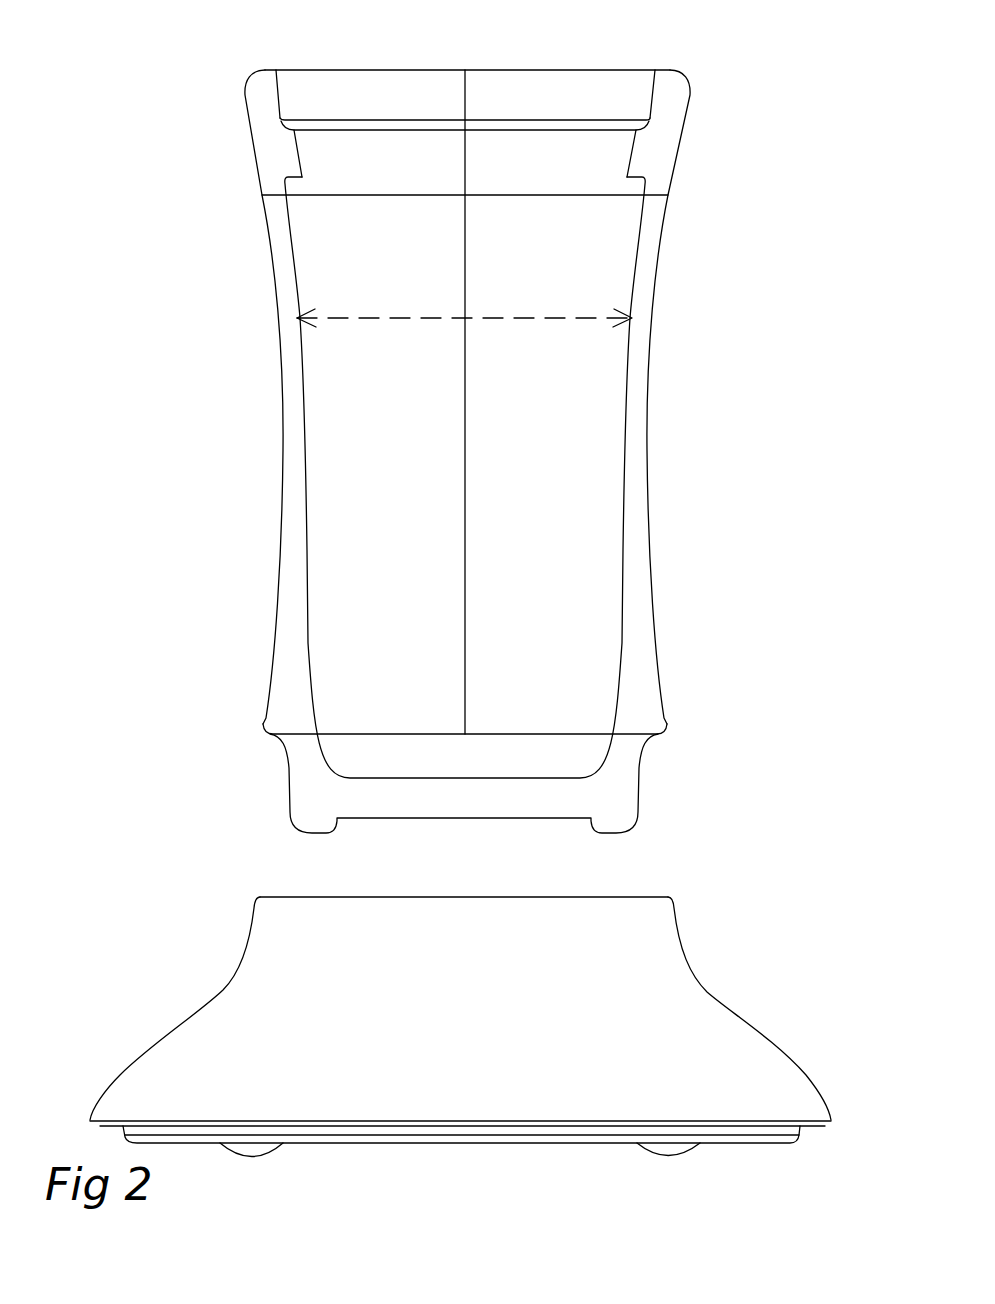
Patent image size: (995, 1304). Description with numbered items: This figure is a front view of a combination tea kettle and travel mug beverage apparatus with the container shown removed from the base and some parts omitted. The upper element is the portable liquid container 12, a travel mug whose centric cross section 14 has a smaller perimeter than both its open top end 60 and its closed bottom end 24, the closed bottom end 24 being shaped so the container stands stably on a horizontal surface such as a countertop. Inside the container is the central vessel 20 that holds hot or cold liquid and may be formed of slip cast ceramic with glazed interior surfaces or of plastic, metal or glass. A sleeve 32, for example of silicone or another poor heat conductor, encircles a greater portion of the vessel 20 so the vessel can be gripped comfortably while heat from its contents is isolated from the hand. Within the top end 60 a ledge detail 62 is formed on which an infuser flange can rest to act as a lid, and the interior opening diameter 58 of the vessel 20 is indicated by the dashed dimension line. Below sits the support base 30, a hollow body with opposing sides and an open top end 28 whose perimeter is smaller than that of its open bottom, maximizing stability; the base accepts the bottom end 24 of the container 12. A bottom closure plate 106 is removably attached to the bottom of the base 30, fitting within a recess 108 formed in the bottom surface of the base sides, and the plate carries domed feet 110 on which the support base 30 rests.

The portable liquid container 12 is at (456, 417).
The centric cross section 14 is at (283, 435).
The central vessel 20 is at (308, 643).
The closed bottom end 24 is at (620, 798).
The open top end 28 is at (505, 1025).
The support base 30 is at (247, 998).
The sleeve 32 is at (287, 310).
The interior opening diameter 58 is at (498, 317).
The open top end 60 is at (390, 80).
The ledge detail 62 is at (274, 125).
The bottom closure plate 106 is at (300, 1128).
The recess 108 is at (825, 1127).
The domed feet 110 is at (658, 1150).